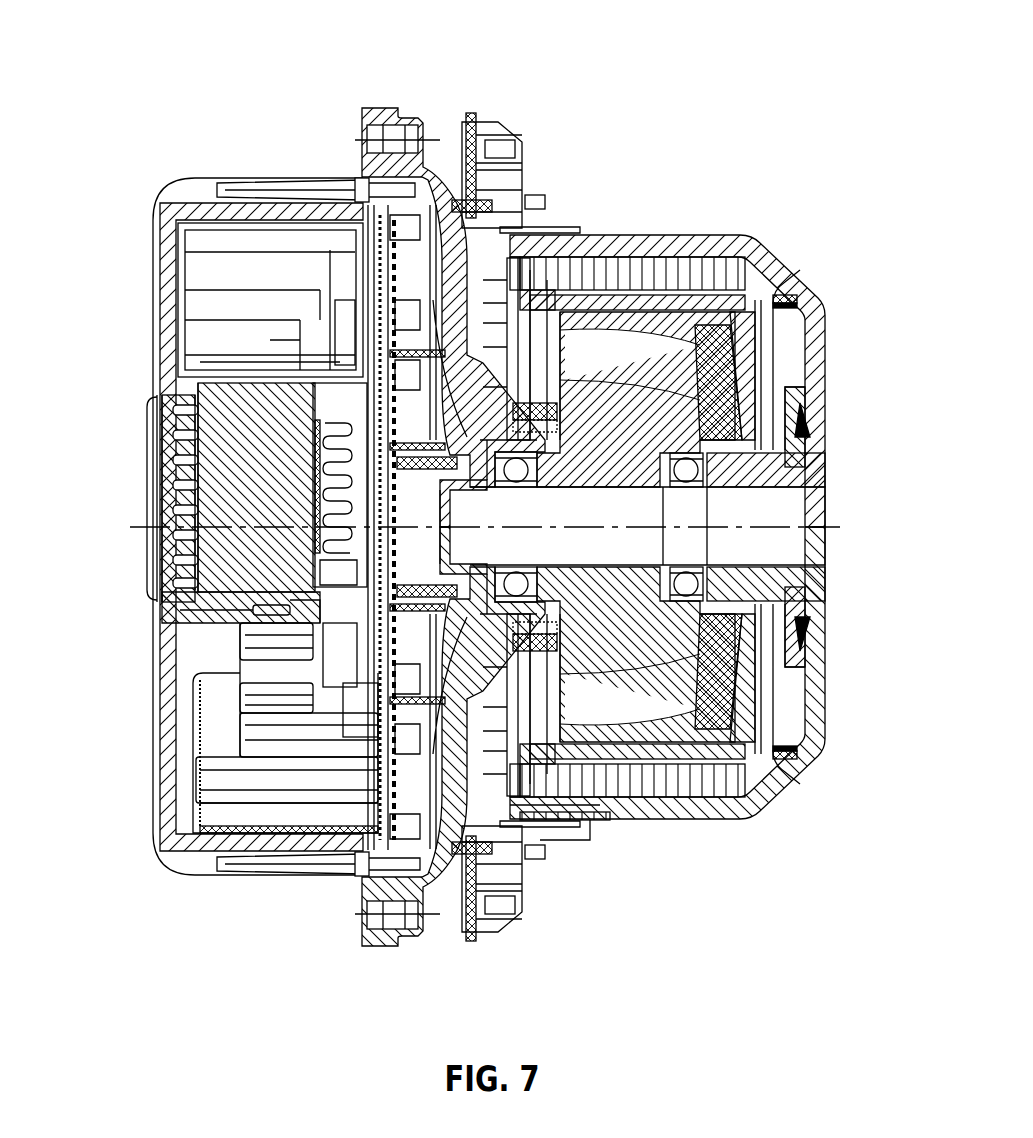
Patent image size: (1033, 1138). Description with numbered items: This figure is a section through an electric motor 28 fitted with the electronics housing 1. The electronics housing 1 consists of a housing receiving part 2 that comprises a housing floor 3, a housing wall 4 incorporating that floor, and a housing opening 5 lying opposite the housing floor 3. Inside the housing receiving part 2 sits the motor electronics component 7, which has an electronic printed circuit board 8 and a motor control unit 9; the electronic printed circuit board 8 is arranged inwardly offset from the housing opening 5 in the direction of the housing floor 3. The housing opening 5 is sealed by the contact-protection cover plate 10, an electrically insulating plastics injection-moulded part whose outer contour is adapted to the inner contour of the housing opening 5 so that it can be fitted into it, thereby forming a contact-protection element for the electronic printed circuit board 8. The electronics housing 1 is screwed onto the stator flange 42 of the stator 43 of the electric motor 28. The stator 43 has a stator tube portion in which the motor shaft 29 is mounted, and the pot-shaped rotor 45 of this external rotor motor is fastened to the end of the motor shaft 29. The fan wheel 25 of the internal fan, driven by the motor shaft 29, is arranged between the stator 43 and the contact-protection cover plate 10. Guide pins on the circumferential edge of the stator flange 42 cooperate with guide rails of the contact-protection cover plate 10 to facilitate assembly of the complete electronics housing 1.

The electronics housing 1 is at (175, 170).
The housing receiving part 2 is at (212, 205).
The housing floor 3 is at (157, 318).
The housing wall 4 is at (247, 852).
The housing opening 5 is at (406, 232).
The motor electronics component 7 is at (310, 477).
The electronic printed circuit board 8 is at (372, 523).
The motor control unit 9 is at (240, 735).
The contact-protection cover plate 10 is at (498, 215).
The fan wheel 25 is at (544, 818).
The electric motor 28 is at (643, 222).
The motor shaft 29 is at (785, 510).
The stator flange 42 is at (556, 298).
The stator 43 is at (770, 366).
The pot-shaped rotor 45 is at (724, 240).